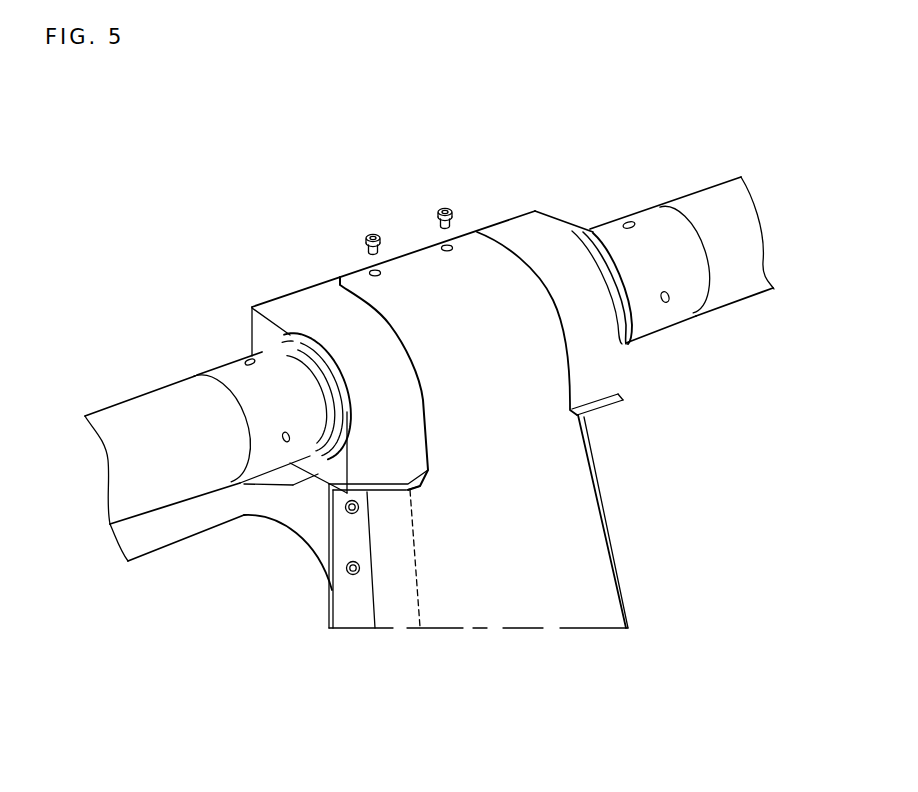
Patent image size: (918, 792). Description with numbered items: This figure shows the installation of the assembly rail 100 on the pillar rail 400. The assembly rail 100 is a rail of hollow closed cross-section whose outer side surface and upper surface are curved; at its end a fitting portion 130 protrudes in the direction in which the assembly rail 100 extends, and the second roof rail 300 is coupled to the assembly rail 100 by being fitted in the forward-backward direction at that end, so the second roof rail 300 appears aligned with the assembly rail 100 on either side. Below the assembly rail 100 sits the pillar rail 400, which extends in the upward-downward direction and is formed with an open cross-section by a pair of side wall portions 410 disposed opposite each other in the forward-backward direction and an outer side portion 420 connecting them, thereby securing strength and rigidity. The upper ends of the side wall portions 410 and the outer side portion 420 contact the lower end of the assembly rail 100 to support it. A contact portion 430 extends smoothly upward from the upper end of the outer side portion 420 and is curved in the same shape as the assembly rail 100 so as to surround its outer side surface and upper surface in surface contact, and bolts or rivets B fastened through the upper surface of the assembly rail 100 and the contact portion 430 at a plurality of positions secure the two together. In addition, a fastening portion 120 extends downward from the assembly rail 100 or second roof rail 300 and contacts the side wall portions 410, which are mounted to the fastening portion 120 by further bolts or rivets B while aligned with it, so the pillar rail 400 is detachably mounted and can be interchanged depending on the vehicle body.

The assembly rail 100 is at (418, 295).
The fastening portion 120 is at (243, 508).
The fitting portion 130 is at (295, 338).
The second roof rail 300 is at (122, 386).
The pillar rail 400 is at (546, 557).
The side wall portions 410 is at (395, 603).
The outer side portion 420 is at (547, 593).
The contact portion 430 is at (474, 236).
The bolts or rivets B is at (247, 360).